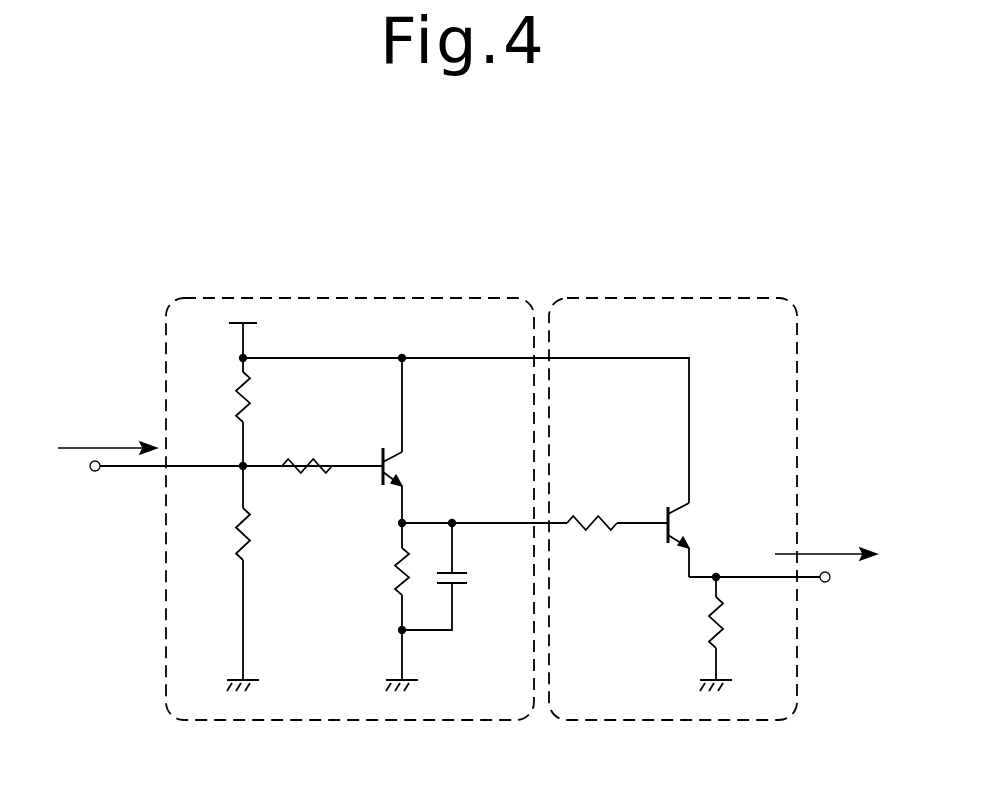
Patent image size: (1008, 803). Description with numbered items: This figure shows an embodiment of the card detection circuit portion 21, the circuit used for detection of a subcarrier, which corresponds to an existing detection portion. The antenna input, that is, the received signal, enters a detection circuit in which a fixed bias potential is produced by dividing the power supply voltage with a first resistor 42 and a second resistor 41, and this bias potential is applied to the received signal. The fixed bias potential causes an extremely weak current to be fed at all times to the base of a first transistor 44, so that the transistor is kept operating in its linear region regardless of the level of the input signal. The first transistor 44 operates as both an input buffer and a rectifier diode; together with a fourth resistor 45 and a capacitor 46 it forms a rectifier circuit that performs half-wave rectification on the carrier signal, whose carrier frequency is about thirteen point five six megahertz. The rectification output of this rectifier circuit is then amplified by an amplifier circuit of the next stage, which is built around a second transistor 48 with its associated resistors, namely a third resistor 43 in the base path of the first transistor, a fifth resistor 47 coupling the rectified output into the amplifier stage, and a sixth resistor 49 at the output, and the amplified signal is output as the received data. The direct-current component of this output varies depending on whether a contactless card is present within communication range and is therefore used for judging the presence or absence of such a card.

The card detection circuit portion 21 is at (523, 269).
The resistor (R2) 41 is at (258, 399).
The resistor (R1) 42 is at (252, 548).
The resistor R3 43 is at (319, 478).
The transistor (Tr1) 44 is at (396, 450).
The resistor (R4) 45 is at (395, 600).
The capacitor (C1) 46 is at (458, 588).
The resistor R5 47 is at (590, 538).
The transistor Tr2 48 is at (677, 503).
The resistor R6 49 is at (728, 619).